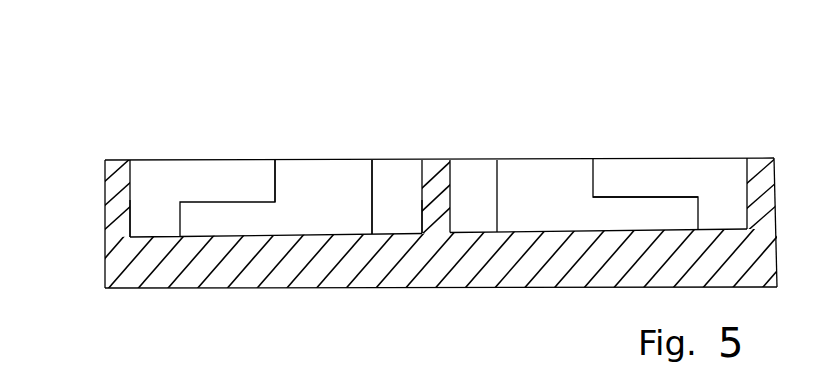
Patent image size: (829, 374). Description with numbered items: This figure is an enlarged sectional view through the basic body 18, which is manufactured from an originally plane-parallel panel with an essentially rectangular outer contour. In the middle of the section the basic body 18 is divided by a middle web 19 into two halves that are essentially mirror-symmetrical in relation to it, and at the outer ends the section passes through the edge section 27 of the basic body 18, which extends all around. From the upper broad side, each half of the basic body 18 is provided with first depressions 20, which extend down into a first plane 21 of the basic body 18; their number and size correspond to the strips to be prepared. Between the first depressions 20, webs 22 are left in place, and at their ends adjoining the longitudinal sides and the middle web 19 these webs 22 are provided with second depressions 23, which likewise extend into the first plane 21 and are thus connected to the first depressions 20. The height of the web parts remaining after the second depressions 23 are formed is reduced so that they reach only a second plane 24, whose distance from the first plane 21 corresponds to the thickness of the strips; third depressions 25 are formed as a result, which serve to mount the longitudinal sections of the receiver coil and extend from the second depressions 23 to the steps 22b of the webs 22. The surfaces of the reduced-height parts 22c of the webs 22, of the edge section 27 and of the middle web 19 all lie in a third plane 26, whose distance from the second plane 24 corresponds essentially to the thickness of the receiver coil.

The basic body 18 is at (415, 289).
The middle web 19 is at (435, 179).
The first depressions 20 is at (213, 222).
The first plane 21 is at (725, 226).
The webs 22 is at (325, 158).
The steps of the webs 22b is at (252, 127).
The parts of the webs with reduced height 22c is at (358, 176).
The second depressions 23 is at (146, 218).
The second plane 24 is at (653, 195).
The third depressions 25 is at (215, 182).
The third plane 26 is at (103, 158).
The edge section 27 is at (118, 215).